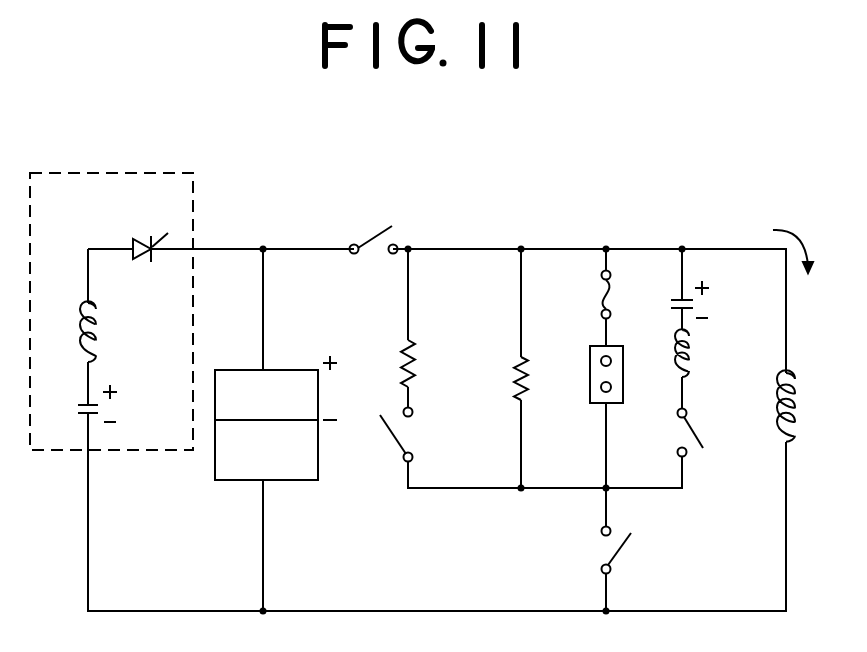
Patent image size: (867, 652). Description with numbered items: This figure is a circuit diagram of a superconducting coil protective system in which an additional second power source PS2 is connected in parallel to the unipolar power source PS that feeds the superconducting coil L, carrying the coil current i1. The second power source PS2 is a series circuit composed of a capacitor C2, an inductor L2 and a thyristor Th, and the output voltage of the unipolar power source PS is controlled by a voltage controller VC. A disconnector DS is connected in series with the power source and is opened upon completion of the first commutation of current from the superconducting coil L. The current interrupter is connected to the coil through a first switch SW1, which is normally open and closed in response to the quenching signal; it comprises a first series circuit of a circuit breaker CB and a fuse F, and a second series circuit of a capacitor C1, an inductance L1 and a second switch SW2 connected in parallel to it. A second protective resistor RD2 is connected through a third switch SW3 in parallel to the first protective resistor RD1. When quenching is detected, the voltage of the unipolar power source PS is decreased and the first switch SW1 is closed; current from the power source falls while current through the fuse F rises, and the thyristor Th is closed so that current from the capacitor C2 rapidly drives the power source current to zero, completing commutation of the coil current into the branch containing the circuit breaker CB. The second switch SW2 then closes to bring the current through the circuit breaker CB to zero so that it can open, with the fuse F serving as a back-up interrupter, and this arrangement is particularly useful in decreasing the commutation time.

The second power source PS2 is at (111, 295).
The thyristor Th is at (149, 231).
The inductor L2 is at (69, 331).
The capacitor C2 is at (76, 405).
The disconnector DS is at (374, 226).
The unipolar power source PS is at (276, 388).
The voltage controller VC is at (266, 450).
The second protective resistor RD2 is at (378, 363).
The third switch SW3 is at (375, 438).
The first protective resistor RD1 is at (494, 378).
The circuit breaker CB is at (584, 374).
The fuse F is at (592, 295).
The capacitor C1 is at (710, 300).
The inductance L1 is at (702, 353).
The superconducting coil L is at (772, 406).
The second switch SW2 is at (720, 433).
The current i1 is at (805, 244).
The first switch SW1 is at (645, 550).